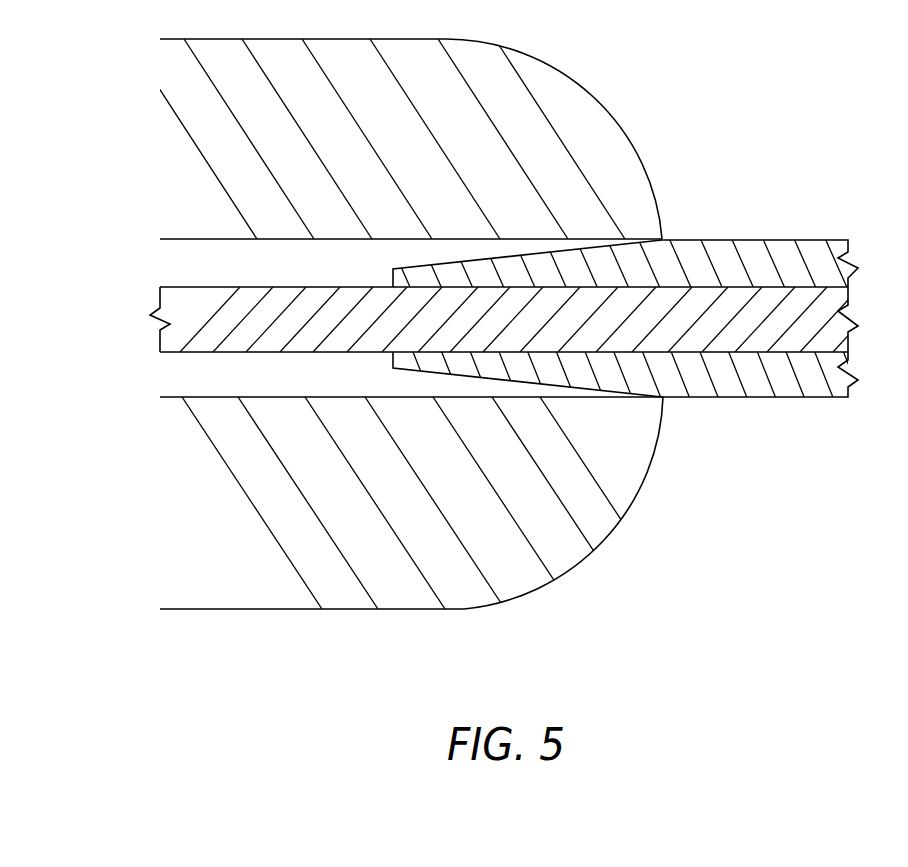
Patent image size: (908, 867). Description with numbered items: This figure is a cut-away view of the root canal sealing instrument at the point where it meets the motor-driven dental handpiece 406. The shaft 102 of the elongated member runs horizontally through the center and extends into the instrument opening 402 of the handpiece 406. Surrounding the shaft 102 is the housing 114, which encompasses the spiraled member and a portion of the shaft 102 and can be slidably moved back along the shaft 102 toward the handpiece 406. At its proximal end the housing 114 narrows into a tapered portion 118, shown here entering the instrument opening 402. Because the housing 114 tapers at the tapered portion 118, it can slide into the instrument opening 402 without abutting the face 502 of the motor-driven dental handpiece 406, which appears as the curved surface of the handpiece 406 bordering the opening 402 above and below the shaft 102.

The shaft 102 is at (190, 287).
The housing 114 is at (812, 240).
The tapered portion 118 is at (402, 269).
The instrument opening 402 is at (177, 370).
The motor-driven dental handpiece 406 is at (565, 73).
The face 502 is at (660, 210).